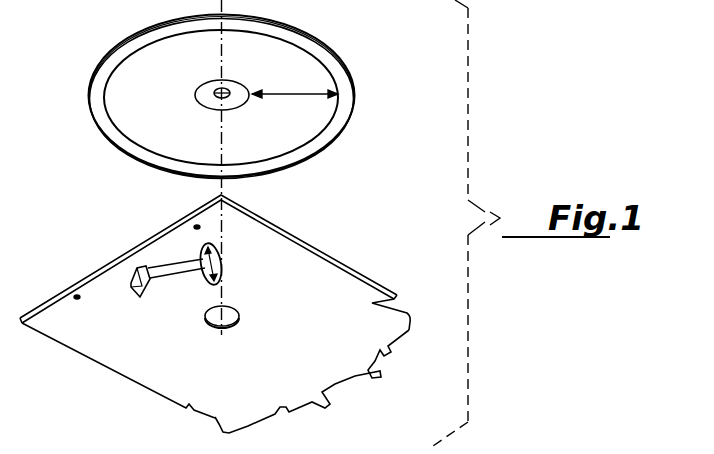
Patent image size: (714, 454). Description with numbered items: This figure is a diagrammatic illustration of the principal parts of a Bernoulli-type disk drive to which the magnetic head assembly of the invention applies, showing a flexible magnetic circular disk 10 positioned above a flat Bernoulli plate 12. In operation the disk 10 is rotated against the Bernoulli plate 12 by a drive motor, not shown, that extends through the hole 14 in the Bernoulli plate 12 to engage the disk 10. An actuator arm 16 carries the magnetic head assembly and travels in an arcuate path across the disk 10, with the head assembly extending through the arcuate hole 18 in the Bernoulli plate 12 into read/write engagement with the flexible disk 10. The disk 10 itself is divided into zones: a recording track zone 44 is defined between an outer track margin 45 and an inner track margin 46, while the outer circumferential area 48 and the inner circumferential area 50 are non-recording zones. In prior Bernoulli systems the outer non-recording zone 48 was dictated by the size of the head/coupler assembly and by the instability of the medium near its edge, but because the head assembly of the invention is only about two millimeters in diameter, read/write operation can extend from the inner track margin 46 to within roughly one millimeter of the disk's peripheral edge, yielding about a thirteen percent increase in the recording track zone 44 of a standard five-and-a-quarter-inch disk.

The flexible magnetic circular disk 10 is at (107, 60).
The Bernoulli plate 12 is at (321, 334).
The hole 14 is at (235, 330).
The actuator arm 16 is at (172, 273).
The arcuate hole 18 is at (222, 261).
The recording track zone 44 is at (291, 93).
The outer track margin 45 is at (320, 58).
The inner track margin 46 is at (233, 110).
The outer circumferential area 48 is at (331, 132).
The inner circumferential area 50 is at (209, 89).